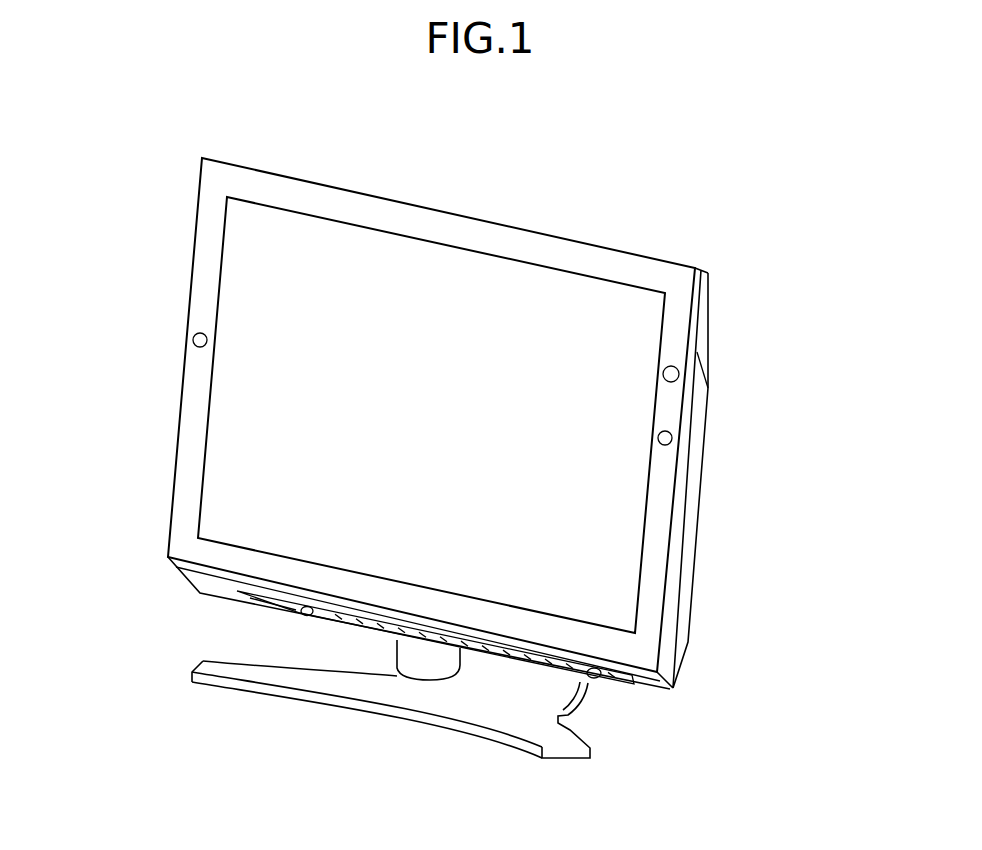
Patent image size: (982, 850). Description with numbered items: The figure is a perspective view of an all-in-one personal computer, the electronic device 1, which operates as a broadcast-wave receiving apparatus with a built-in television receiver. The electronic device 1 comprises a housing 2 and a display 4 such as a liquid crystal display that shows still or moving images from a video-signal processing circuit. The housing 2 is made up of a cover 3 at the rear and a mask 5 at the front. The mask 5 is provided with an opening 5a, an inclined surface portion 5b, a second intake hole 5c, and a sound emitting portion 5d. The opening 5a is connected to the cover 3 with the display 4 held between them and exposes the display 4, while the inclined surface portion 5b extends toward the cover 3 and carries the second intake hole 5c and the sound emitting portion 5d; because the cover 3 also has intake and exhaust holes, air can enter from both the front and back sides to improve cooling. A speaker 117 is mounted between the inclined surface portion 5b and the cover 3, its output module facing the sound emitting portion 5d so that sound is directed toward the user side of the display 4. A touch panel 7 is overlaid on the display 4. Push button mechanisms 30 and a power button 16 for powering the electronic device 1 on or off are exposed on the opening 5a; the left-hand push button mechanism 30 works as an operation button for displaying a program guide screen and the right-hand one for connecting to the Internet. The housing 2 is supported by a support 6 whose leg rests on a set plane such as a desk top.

The electronic device 1 is at (468, 183).
The housing 2 is at (393, 178).
The cover 3 is at (703, 512).
The display 4 is at (540, 293).
The mask 5 is at (707, 305).
The opening 5a is at (665, 333).
The inclined surface portion 5b is at (198, 585).
The second intake hole 5c is at (412, 636).
The sound emitting portion 5d is at (300, 611).
The support 6 is at (432, 706).
The touch panel 7 is at (608, 570).
The power button 16 is at (679, 373).
The push button mechanism 30 is at (193, 339).
The speaker 117 is at (625, 690).